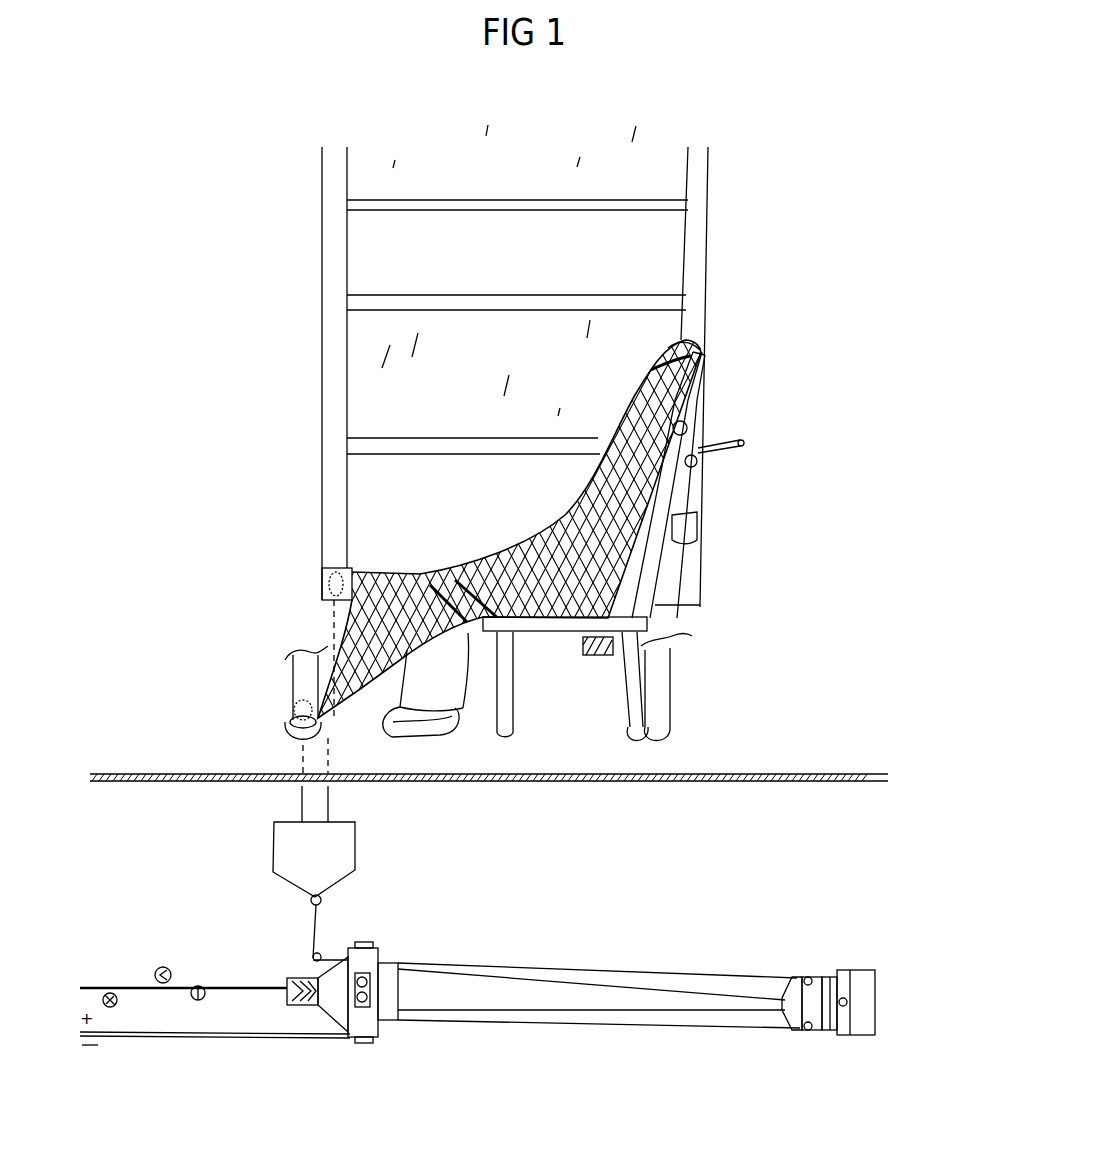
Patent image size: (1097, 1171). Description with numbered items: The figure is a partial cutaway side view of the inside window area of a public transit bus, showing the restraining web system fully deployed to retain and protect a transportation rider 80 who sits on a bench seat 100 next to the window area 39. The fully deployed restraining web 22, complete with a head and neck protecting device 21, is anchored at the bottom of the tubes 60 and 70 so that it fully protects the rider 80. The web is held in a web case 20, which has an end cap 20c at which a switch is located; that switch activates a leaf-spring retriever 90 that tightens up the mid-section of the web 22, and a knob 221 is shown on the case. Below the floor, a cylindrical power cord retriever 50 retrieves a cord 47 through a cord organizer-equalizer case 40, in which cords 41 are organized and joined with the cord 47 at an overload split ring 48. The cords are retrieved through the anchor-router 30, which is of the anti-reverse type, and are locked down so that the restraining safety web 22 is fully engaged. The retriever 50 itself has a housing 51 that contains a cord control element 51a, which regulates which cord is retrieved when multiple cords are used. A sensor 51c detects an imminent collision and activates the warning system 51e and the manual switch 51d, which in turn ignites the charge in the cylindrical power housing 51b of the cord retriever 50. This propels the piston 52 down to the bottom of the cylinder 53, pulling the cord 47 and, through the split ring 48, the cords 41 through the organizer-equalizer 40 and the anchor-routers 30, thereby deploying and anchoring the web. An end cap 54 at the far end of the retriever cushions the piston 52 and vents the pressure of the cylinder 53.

The window area 39 is at (523, 142).
The tube 70 is at (308, 239).
The restraining web 22 is at (703, 337).
The head and neck protecting device 21 is at (703, 382).
The knob 221 is at (700, 463).
The web case 20 is at (691, 506).
The end cap 20c is at (692, 523).
The transportation rider 80 is at (535, 506).
The anchor-router 30 is at (307, 590).
The tube 60 is at (281, 679).
The bench seat 100 is at (548, 645).
The leaf-spring retriever 90 is at (598, 665).
The cords 41 is at (292, 810).
The cord organizer-equalizer case 40 is at (344, 861).
The overload split ring 48 is at (323, 902).
The cord 47 is at (303, 933).
The housing 51 is at (417, 962).
The cord control element 51a is at (378, 937).
The cylindrical power housing 51b is at (284, 1005).
The sensor 51c is at (166, 965).
The manual switch 51d is at (204, 989).
The warning system 51e is at (104, 984).
The cylindrical power cord retriever 50 is at (553, 964).
The piston 52 is at (798, 977).
The cylinder 53 is at (690, 967).
The end cap 54 is at (837, 968).